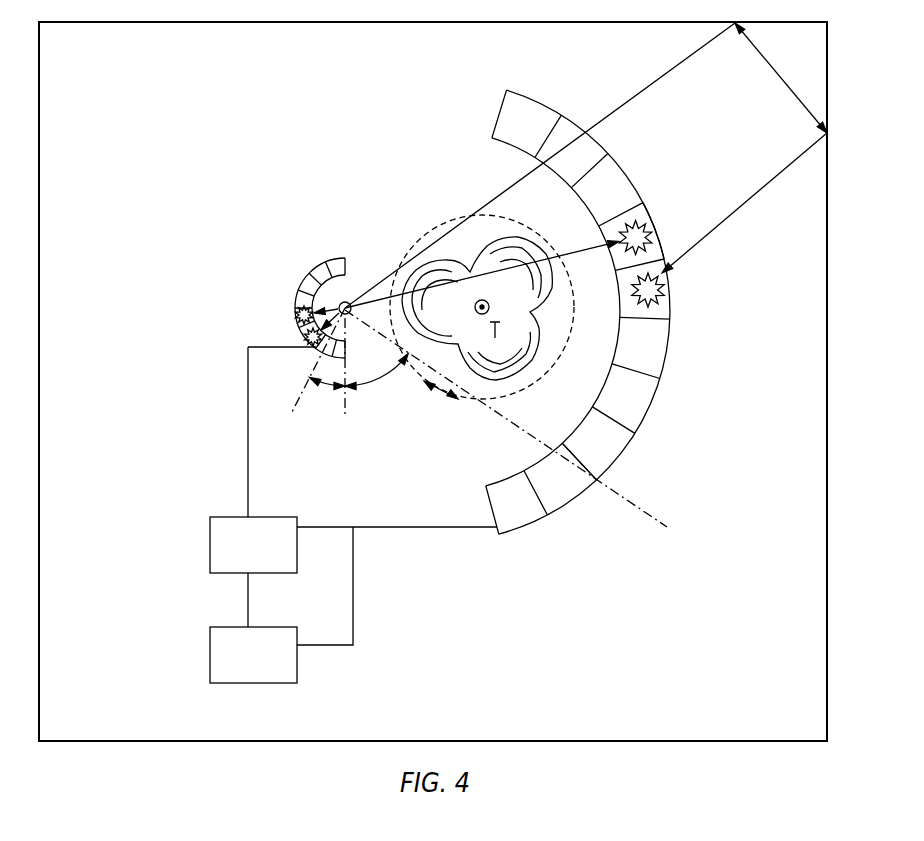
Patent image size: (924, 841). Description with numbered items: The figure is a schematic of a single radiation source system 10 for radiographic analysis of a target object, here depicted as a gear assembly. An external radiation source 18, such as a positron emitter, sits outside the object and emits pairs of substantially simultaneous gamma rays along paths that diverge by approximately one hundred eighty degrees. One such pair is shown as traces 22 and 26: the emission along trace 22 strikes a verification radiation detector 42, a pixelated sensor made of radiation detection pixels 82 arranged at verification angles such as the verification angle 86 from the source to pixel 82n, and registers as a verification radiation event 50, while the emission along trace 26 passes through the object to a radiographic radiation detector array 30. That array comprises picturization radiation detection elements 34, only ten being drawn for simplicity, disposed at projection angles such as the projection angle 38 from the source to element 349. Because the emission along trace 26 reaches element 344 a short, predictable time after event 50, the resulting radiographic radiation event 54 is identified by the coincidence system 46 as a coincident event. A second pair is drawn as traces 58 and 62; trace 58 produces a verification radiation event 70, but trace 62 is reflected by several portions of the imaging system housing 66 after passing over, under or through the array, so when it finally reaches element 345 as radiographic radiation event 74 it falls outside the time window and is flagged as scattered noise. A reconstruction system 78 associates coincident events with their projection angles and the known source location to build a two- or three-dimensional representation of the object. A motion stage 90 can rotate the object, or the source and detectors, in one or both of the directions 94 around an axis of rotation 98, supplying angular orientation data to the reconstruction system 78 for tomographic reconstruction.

The system for radiographic analysis 10 is at (250, 183).
The external radiation source 18 is at (352, 303).
The trace 22 is at (344, 302).
The trace 26 is at (600, 227).
The radiographic radiation detector array 30 is at (592, 558).
The picturization radiation detection elements 34 is at (620, 458).
The picturization radiation detection element 34-4 344 is at (641, 203).
The picturization radiation detection element 34-5 345 is at (673, 293).
The picturization radiation detection element 34-9 349 is at (583, 498).
The projection angle 38 is at (373, 386).
The verification radiation detector 42 is at (298, 283).
The coincidence system 46 is at (210, 531).
The verification radiation event 50 is at (297, 317).
The radiographic radiation event 54 is at (658, 215).
The trace 58 is at (348, 317).
The trace 62 is at (530, 173).
The imaging system housing 66 is at (327, 22).
The verification radiation event 70 is at (306, 336).
The radiographic radiation event 74 is at (668, 278).
The reconstruction system 78 is at (210, 645).
The radiation detection pixels 82 is at (330, 272).
The pixel 82-n 82n is at (337, 358).
The verification angle 86 is at (331, 393).
The motion stage 90 is at (537, 379).
The directions 94 is at (442, 398).
The axis of rotation 98 is at (490, 307).